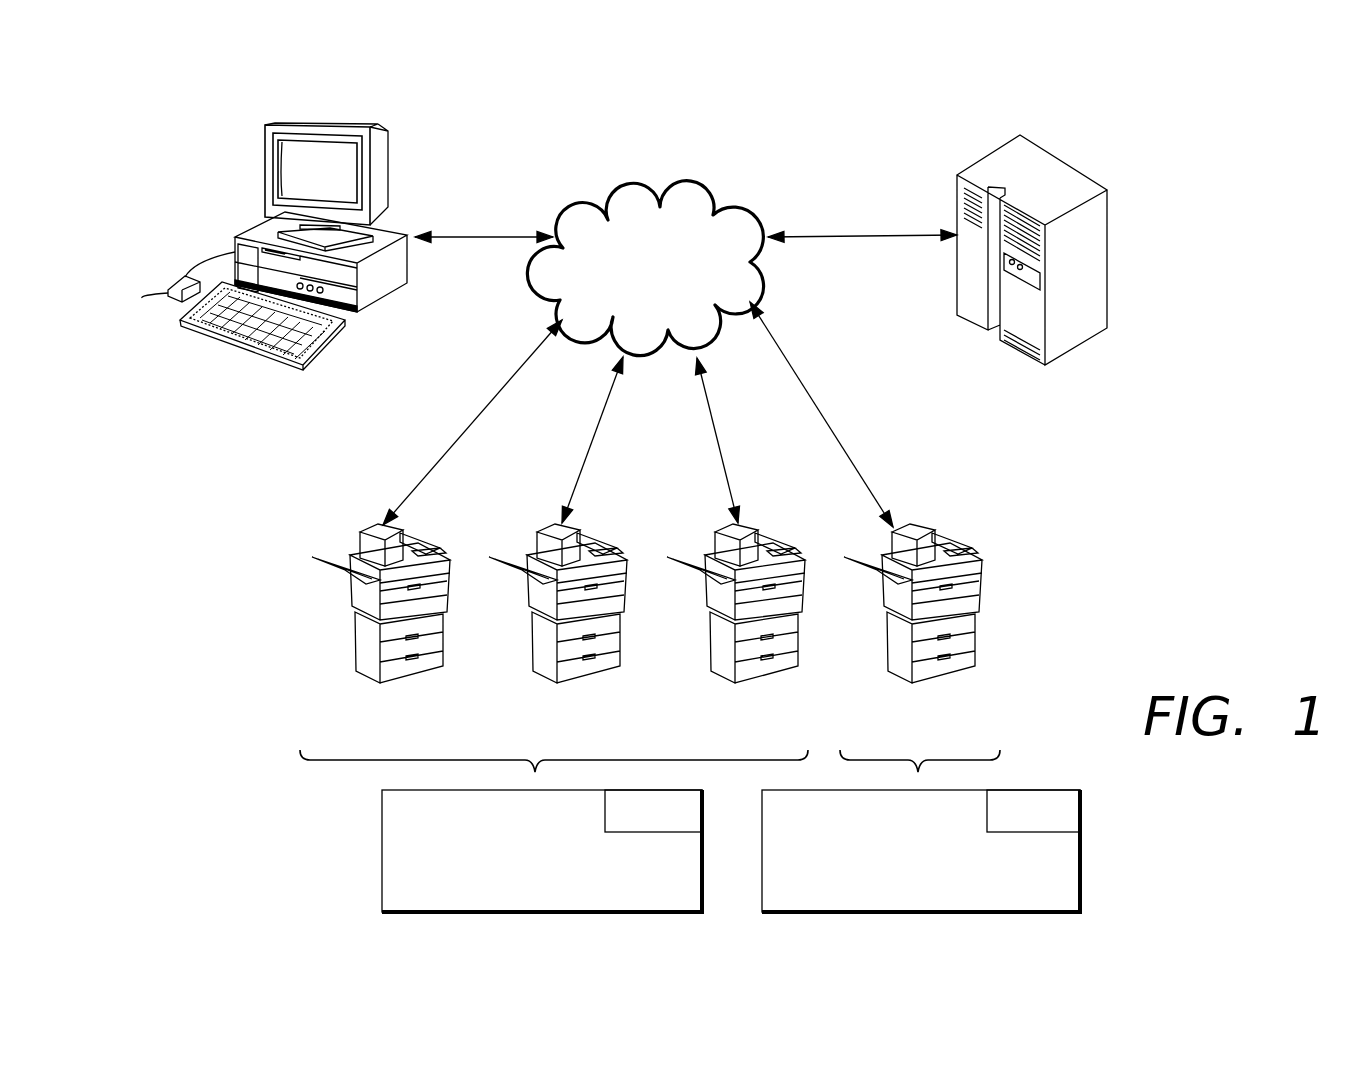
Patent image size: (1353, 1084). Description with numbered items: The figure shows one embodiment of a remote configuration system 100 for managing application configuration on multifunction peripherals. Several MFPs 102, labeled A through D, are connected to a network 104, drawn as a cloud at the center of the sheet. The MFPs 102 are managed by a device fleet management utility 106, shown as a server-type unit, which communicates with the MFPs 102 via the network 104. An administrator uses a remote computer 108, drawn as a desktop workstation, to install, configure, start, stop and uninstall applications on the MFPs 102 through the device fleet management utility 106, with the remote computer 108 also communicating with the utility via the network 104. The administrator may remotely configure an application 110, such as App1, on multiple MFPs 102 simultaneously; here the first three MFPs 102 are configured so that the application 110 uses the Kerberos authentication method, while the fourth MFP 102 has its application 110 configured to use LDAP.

The remote configuration system 100 is at (188, 489).
The multifunction peripheral 102 is at (408, 677).
The network 104 is at (680, 182).
The device fleet management utility 106 is at (1052, 170).
The remote computer 108 is at (327, 123).
The application 110 is at (397, 823).